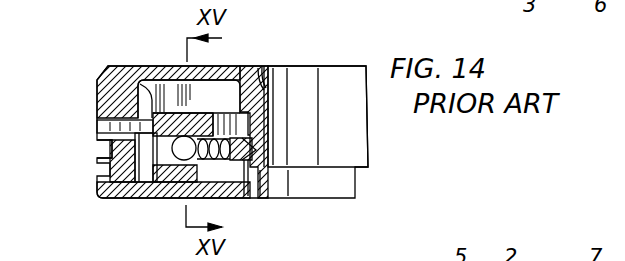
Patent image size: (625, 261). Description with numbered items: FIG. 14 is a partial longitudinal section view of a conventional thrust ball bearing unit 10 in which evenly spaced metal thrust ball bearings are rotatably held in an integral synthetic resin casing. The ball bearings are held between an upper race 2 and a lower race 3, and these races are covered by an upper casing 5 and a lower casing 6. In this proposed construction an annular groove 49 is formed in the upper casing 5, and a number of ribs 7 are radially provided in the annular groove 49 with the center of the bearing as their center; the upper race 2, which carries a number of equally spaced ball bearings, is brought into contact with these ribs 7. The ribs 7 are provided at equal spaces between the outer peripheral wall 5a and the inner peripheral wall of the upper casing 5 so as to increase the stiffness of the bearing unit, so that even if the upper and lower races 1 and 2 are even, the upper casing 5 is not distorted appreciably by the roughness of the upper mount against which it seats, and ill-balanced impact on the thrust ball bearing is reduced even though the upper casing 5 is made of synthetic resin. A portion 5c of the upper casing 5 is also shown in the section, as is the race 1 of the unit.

The valve assembly 10 is at (86, 55).
The upper casing 5 is at (252, 68).
The outer peripheral wall 5a is at (97, 107).
The housing boss 5c is at (146, 84).
The upper race 2 is at (185, 104).
The annular groove 49 is at (198, 91).
The ribs 7 is at (220, 103).
The upper race 1 is at (155, 154).
The lower casing 6 is at (152, 197).
The lower race 3 is at (207, 181).